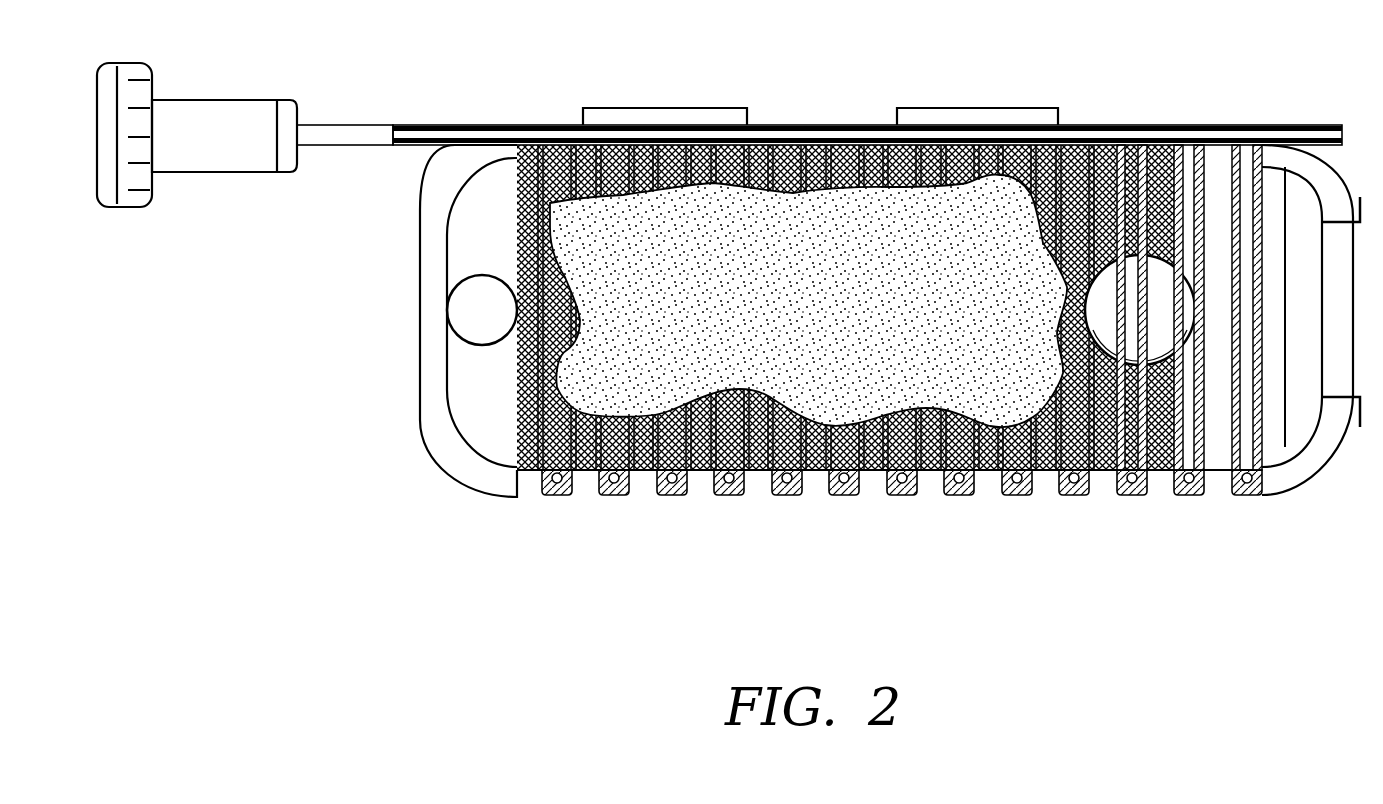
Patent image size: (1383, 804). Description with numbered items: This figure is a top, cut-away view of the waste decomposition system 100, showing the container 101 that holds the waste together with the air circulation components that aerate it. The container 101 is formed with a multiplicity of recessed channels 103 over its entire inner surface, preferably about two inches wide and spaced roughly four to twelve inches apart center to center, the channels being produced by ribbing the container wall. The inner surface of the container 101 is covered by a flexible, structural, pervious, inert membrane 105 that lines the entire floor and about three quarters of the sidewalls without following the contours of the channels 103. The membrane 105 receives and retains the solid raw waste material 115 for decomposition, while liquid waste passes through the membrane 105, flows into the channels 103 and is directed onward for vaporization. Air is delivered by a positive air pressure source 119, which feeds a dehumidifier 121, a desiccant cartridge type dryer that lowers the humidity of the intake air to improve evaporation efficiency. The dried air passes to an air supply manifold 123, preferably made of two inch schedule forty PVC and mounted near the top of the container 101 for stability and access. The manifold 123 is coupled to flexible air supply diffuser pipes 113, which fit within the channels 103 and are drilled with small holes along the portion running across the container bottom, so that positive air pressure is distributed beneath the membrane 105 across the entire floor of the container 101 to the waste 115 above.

The power converter assembly 100 is at (1298, 46).
The container 101 is at (420, 374).
The waste channels 103 is at (630, 495).
The porous membrane 105 is at (531, 470).
The air supply diffuser pipes 113 is at (905, 496).
The solid raw waste material 115 is at (748, 122).
The positive air pressure source 119 is at (195, 100).
The dehumidifier 121 is at (297, 110).
The air supply manifold 123 is at (450, 127).